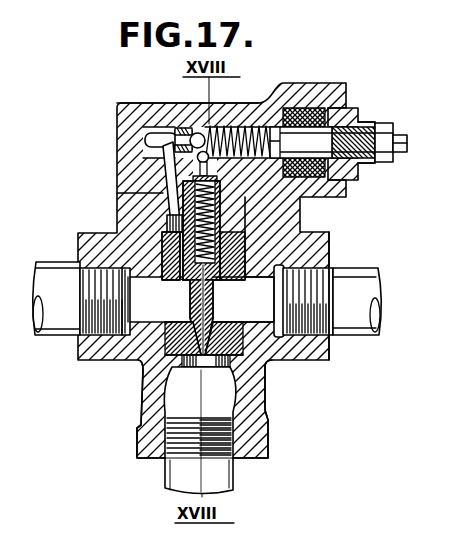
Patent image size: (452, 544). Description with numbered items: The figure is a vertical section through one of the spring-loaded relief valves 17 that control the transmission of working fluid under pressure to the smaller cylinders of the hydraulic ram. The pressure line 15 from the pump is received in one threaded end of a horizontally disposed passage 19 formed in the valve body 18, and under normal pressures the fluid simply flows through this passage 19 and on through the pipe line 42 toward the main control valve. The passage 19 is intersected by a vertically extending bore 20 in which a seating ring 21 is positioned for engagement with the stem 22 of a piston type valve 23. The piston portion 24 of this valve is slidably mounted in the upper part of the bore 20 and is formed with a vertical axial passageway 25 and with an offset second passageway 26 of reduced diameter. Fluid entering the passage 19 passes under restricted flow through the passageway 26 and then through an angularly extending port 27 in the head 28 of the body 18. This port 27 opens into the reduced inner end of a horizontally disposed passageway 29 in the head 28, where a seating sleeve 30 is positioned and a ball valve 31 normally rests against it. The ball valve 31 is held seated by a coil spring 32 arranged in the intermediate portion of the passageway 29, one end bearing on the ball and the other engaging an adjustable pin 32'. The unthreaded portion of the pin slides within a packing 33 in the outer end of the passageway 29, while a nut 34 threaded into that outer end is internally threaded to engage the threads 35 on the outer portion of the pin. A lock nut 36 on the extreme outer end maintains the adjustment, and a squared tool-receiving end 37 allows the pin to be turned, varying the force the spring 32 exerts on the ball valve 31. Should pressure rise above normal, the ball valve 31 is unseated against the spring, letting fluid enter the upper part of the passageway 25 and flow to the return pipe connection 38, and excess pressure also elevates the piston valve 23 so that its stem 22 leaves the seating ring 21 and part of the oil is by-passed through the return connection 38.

The pressure line 15 is at (50, 262).
The relief valve 17 is at (97, 148).
The valve body 18 is at (262, 383).
The horizontally disposed passage 19 is at (249, 306).
The vertically extending bore 20 is at (233, 229).
The seating ring 21 is at (143, 363).
The stem 22 is at (190, 296).
The piston type valve 23 is at (226, 283).
The piston portion 24 is at (244, 260).
The axial passageway 25 is at (190, 311).
The offset second passageway 26 is at (165, 243).
The angularly extending port 27 is at (172, 167).
The head 28 is at (240, 104).
The horizontally disposed passageway 29 is at (258, 130).
The seating sleeve 30 is at (176, 132).
The ball valve 31 is at (197, 132).
The coil spring 32 is at (307, 105).
The adjustable pin 32' is at (235, 265).
The packing 33 is at (320, 172).
The nut 34 is at (361, 121).
The threads 35 is at (376, 160).
The lock nut 36 is at (388, 126).
The squared tool-receiving end 37 is at (405, 140).
The return pipe connection 38 is at (176, 476).
The pipe line 42 is at (374, 288).